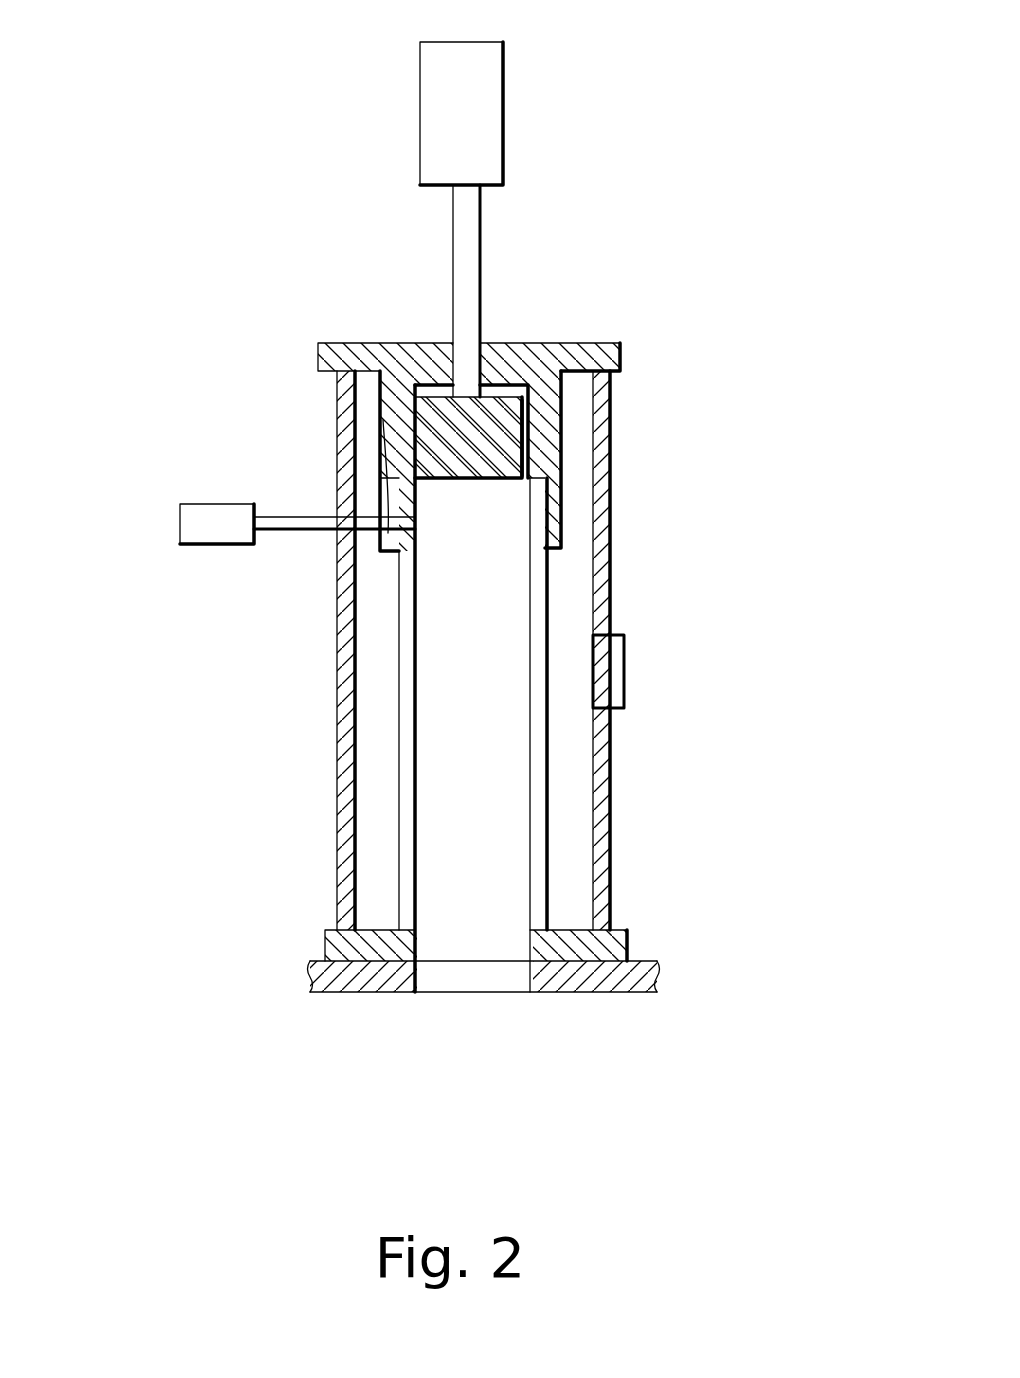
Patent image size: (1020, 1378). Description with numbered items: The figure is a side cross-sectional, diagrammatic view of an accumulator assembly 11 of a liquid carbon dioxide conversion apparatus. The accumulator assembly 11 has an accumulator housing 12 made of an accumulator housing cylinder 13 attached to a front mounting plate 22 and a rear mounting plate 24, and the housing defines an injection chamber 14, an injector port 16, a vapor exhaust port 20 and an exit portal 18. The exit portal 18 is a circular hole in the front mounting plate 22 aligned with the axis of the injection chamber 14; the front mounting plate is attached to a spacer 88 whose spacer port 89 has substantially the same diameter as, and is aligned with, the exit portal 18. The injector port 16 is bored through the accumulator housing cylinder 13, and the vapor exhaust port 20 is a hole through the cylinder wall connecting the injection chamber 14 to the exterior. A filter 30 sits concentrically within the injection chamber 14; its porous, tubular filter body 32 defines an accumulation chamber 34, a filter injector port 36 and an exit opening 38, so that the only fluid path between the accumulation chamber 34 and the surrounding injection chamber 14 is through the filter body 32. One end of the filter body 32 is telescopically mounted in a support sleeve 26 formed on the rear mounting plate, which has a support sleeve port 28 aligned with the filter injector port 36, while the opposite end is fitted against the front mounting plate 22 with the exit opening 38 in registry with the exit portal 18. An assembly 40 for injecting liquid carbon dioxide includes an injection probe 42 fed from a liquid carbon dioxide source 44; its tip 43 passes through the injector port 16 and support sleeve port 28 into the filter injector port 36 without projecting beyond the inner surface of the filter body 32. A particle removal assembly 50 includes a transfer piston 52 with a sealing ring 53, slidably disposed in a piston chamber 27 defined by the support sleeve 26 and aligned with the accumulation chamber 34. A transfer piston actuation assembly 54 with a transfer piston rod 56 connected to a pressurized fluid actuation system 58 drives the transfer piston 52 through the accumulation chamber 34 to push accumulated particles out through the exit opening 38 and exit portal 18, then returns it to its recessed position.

The accumulator assembly 11 is at (740, 318).
The accumulator housing 12 is at (612, 740).
The accumulator housing cylinder 13 is at (340, 855).
The injection chamber 14 is at (575, 538).
The injector port 16 is at (340, 517).
The exit portal 18 is at (470, 930).
The vapor exhaust port 20 is at (610, 658).
The front mounting plate 22 is at (627, 942).
The rear mounting plate 24 is at (352, 345).
The support sleeve 26 is at (563, 488).
The piston chamber 27 is at (425, 370).
The support sleeve port 28 is at (388, 530).
The filter 30 is at (605, 845).
The filter body 32 is at (400, 822).
The accumulation chamber 34 is at (442, 782).
The filter injector port 36 is at (415, 522).
The exit opening 38 is at (520, 905).
The assembly for injecting liquid carbon dioxide 40 is at (140, 430).
The injection probe 42 is at (298, 517).
The tip 43 is at (385, 512).
The liquid carbon dioxide source 44 is at (215, 547).
The particle removal assembly 50 is at (568, 192).
The transfer piston 52 is at (480, 393).
The sealing ring 53 is at (522, 415).
The transfer piston actuation assembly 54 is at (350, 170).
The transfer piston rod 56 is at (453, 277).
The pressurized fluid actuation system 58 is at (433, 85).
The spacer 88 is at (545, 992).
The spacer port 89 is at (442, 985).